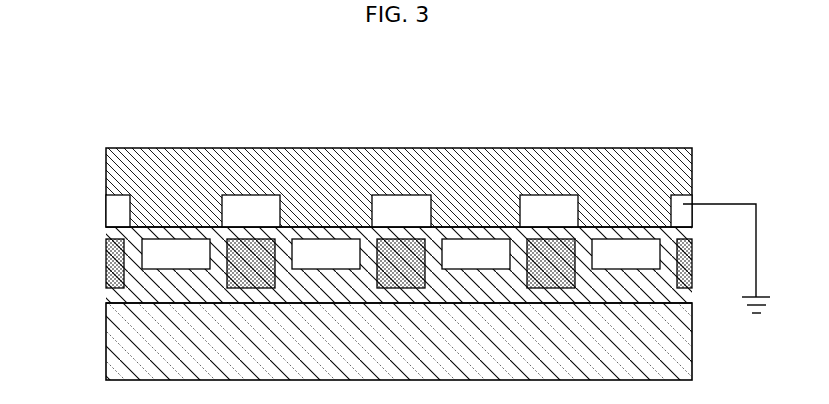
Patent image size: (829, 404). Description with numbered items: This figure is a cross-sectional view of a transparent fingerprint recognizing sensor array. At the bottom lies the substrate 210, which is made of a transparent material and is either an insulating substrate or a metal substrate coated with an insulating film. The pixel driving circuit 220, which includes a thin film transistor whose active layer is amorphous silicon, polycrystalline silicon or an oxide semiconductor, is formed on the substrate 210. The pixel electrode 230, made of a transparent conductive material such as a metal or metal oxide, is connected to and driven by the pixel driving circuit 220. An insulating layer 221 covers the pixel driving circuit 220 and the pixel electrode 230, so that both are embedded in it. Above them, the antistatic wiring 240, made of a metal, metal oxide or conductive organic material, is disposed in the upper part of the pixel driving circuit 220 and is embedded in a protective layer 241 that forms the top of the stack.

The substrate 210 is at (105, 340).
The pixel driving circuit 220 is at (105, 263).
The insulating layer 221 is at (105, 300).
The pixel electrode 230 is at (200, 148).
The antistatic wiring 240 is at (105, 212).
The protective layer 241 is at (105, 168).